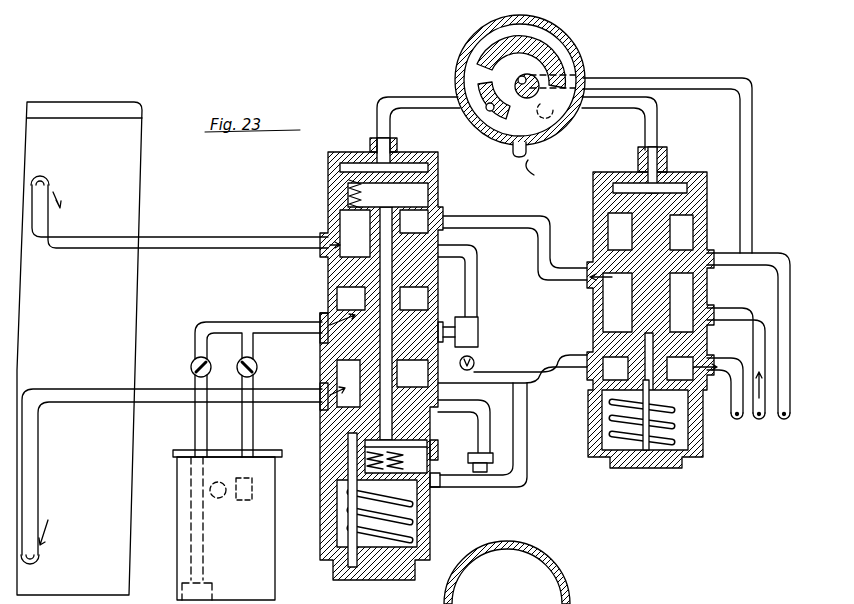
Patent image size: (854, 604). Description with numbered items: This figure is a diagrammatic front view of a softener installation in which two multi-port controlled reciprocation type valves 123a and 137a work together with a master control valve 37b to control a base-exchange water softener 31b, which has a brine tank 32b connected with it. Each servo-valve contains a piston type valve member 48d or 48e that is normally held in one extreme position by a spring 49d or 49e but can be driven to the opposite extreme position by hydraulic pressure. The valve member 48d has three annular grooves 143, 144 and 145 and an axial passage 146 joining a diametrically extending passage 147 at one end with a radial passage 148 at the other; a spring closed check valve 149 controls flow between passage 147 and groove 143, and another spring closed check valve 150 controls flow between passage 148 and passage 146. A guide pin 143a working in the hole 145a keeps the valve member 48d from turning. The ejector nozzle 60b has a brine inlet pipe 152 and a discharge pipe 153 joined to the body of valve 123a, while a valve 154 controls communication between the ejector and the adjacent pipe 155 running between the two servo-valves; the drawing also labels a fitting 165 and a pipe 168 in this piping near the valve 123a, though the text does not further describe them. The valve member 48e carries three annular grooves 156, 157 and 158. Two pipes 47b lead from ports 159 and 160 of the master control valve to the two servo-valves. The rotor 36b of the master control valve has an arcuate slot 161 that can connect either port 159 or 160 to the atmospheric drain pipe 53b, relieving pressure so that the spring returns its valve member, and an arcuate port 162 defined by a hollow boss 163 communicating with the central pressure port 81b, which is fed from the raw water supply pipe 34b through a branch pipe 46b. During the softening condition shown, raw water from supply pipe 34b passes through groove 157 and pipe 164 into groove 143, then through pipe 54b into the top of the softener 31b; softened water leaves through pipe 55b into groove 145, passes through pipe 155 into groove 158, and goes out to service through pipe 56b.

The base-exchange water softener 31b is at (142, 312).
The brine tank 32b is at (177, 557).
The raw water supply pipe 34b is at (758, 420).
The rotor 36b is at (530, 150).
The master control valve 37b is at (596, 74).
The branch pipe 46b is at (740, 346).
The pipes 47b is at (400, 97).
The piston type valve member 48d is at (322, 352).
The piston type valve member 48e is at (700, 190).
The spring 49d is at (380, 565).
The spring 49e is at (630, 462).
The atmospheric drain pipe 53b is at (546, 175).
The pipe 54b is at (190, 242).
The pipe 55b is at (78, 388).
The pipe 56b is at (734, 420).
The ejector nozzle 60b is at (470, 330).
The central pressure port 81b is at (534, 108).
The multi-port controlled reciprocation type valve 123a is at (312, 303).
The multi-port controlled reciprocation type valve 137a is at (586, 328).
The annular groove 143 is at (345, 228).
The guide pin 143a is at (342, 565).
The annular groove 144 is at (420, 300).
The annular groove 145 is at (325, 378).
The hole 145a is at (320, 438).
The axial passage 146 is at (383, 262).
The diametrically extending passage 147 is at (420, 196).
The radial passage 148 is at (423, 458).
The spring closed check valve 149 is at (345, 196).
The spring closed check valve 150 is at (430, 448).
The brine inlet pipe 152 is at (470, 340).
The discharge pipe 153 is at (478, 286).
The valve 154 is at (475, 363).
The pipe 155 is at (480, 385).
The annular groove 156 is at (686, 235).
The annular groove 157 is at (685, 300).
The annular groove 158 is at (590, 385).
The port 159 is at (480, 118).
The port 160 is at (568, 128).
The arcuate slot 161 is at (496, 140).
The arcuate port 162 is at (560, 42).
The hollow boss 163 is at (572, 60).
The pipe 164 is at (537, 226).
The fitting 165 is at (485, 437).
The pipe 168 is at (512, 490).